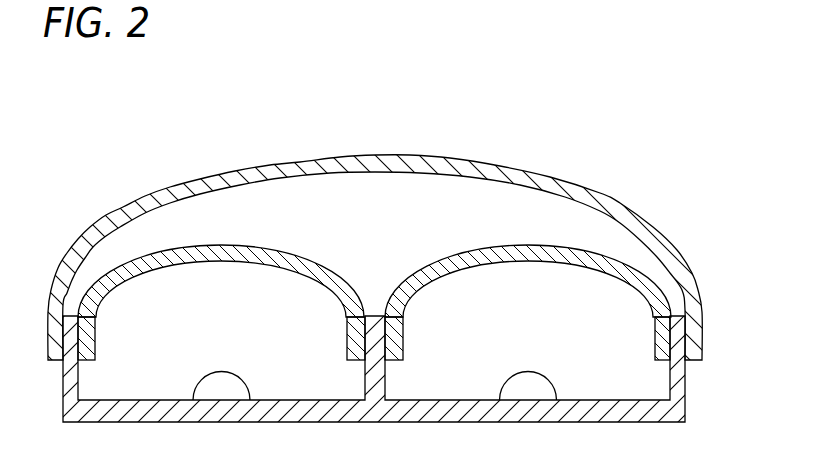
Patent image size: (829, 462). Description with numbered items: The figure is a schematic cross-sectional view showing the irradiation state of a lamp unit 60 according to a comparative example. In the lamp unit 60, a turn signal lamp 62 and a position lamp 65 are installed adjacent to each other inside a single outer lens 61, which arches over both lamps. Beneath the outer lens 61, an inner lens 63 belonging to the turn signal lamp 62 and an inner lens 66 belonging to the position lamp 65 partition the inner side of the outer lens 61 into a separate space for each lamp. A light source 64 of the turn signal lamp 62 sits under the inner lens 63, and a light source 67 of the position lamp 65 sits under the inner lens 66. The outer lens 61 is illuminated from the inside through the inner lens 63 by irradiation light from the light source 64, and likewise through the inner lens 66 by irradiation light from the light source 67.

The lamp unit 60 is at (381, 247).
The outer lens 61 is at (473, 162).
The turn signal lamp 62 is at (235, 232).
The inner lens 63 is at (300, 248).
The light source 64 is at (230, 372).
The position lamp 65 is at (515, 233).
The inner lens 66 is at (453, 253).
The light source 67 is at (537, 370).